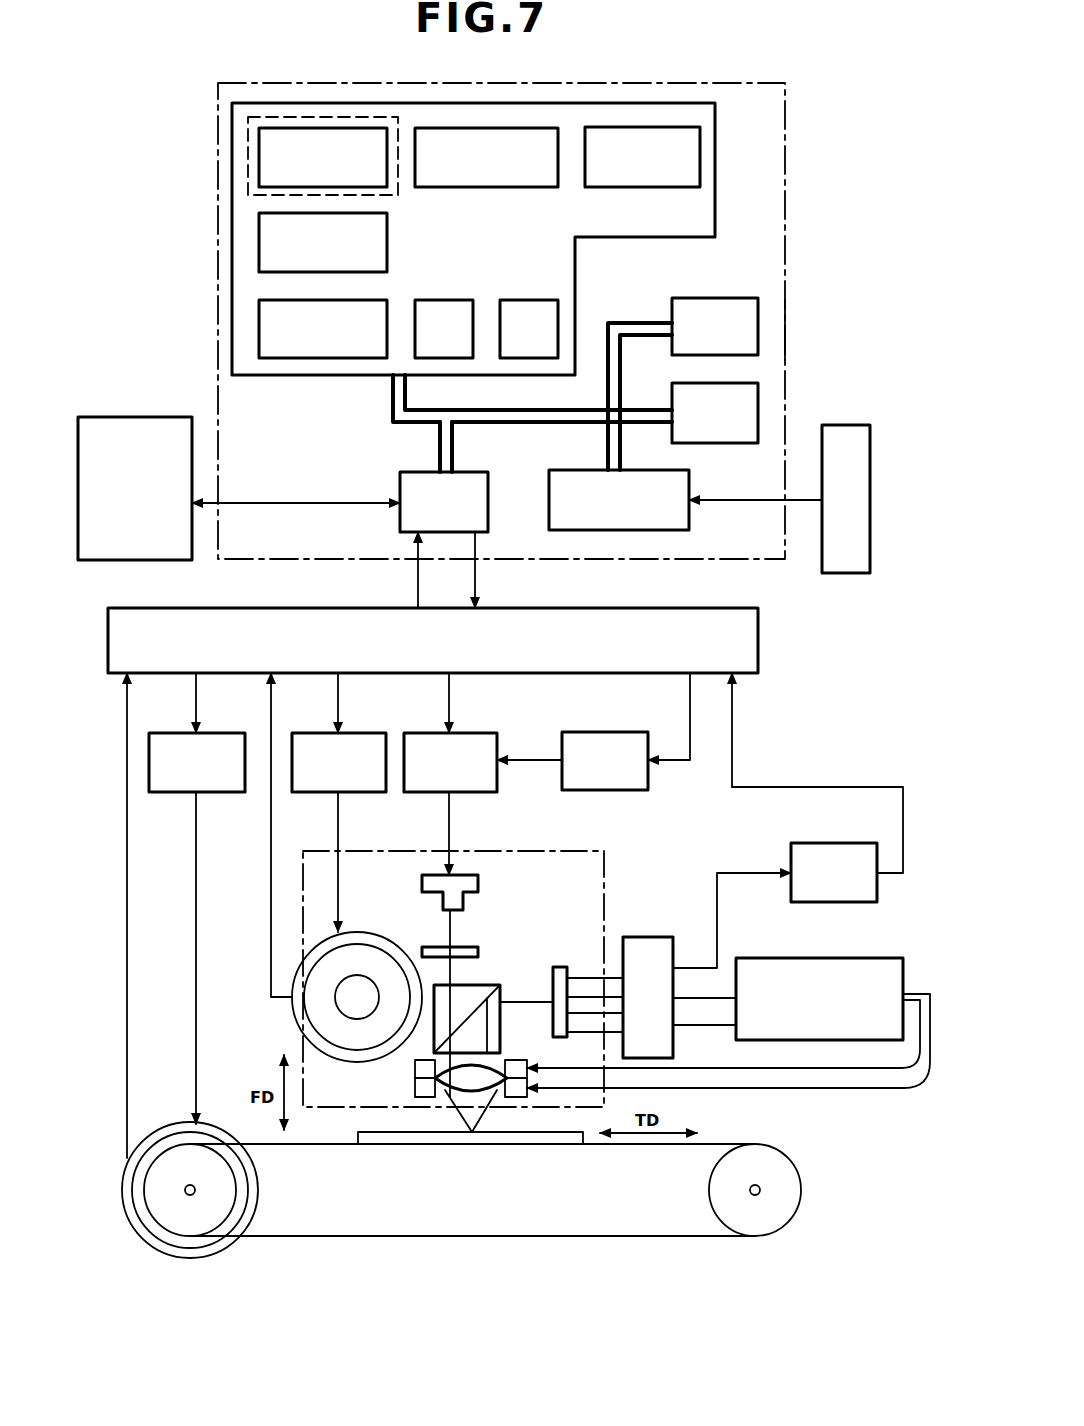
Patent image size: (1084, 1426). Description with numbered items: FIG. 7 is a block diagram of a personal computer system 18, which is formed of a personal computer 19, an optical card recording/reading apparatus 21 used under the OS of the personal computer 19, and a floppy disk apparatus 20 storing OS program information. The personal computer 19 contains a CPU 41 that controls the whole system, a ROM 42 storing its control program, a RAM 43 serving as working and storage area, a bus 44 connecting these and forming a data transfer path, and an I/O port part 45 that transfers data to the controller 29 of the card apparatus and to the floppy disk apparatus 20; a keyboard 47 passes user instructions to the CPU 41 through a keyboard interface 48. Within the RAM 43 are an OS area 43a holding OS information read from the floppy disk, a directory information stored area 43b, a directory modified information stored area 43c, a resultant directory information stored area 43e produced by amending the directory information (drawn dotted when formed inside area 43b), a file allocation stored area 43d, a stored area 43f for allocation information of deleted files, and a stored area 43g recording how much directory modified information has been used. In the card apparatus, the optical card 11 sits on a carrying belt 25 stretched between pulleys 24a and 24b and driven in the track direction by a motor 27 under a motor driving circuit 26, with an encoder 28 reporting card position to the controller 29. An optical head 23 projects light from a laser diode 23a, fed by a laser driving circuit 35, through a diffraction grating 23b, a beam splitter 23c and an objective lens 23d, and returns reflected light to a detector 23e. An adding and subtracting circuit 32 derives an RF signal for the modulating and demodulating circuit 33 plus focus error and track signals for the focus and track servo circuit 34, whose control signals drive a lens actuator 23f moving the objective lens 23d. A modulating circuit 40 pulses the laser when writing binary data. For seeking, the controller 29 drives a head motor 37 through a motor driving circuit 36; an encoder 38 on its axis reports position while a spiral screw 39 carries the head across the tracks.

The personal computer system 18 is at (803, 125).
The personal computer 19 is at (785, 330).
The floppy disk apparatus 20 is at (130, 417).
The optical card recording/reading apparatus 21 is at (812, 725).
The optical head 23 is at (565, 842).
The laser diode 23a is at (478, 886).
The diffraction grating 23b is at (470, 947).
The beam splitter 23c is at (488, 985).
The objective lens 23d is at (415, 1085).
The detector 23e is at (558, 967).
The lens actuator 23f is at (520, 1097).
The pulley 24a is at (223, 1200).
The pulley 24b is at (780, 1203).
The carrying belt 25 is at (485, 1237).
The motor driving circuit 26 is at (228, 733).
The motor 27 is at (203, 1248).
The encoder 28 is at (182, 1258).
The controller 29 is at (760, 645).
The adding and subtracting circuit 32 is at (643, 937).
The modulating and demodulating circuit 33 is at (834, 843).
The focus and track servo circuit 34 is at (866, 958).
The laser driving circuit 35 is at (483, 733).
The motor driving circuit 36 is at (366, 733).
The head motor 37 is at (372, 932).
The encoder 38 is at (296, 1020).
The spiral screw 39 is at (352, 1007).
The modulating circuit 40 is at (612, 732).
The CPU 41 is at (737, 443).
The ROM 42 is at (672, 307).
The RAM 43 is at (588, 237).
The OS area 43a is at (650, 187).
The directory information stored area 43b is at (259, 150).
The directory modified information stored area 43c is at (259, 250).
The file allocation stored area 43d is at (259, 338).
The resultant directory information stored area 43e is at (398, 187).
The stored area 43f is at (440, 300).
The stored area 43g is at (530, 300).
The bus 44 is at (393, 402).
The I/O port part 45 is at (415, 472).
The keyboard 47 is at (847, 425).
The keyboard interface 48 is at (580, 470).
The optical card 11 is at (410, 1146).